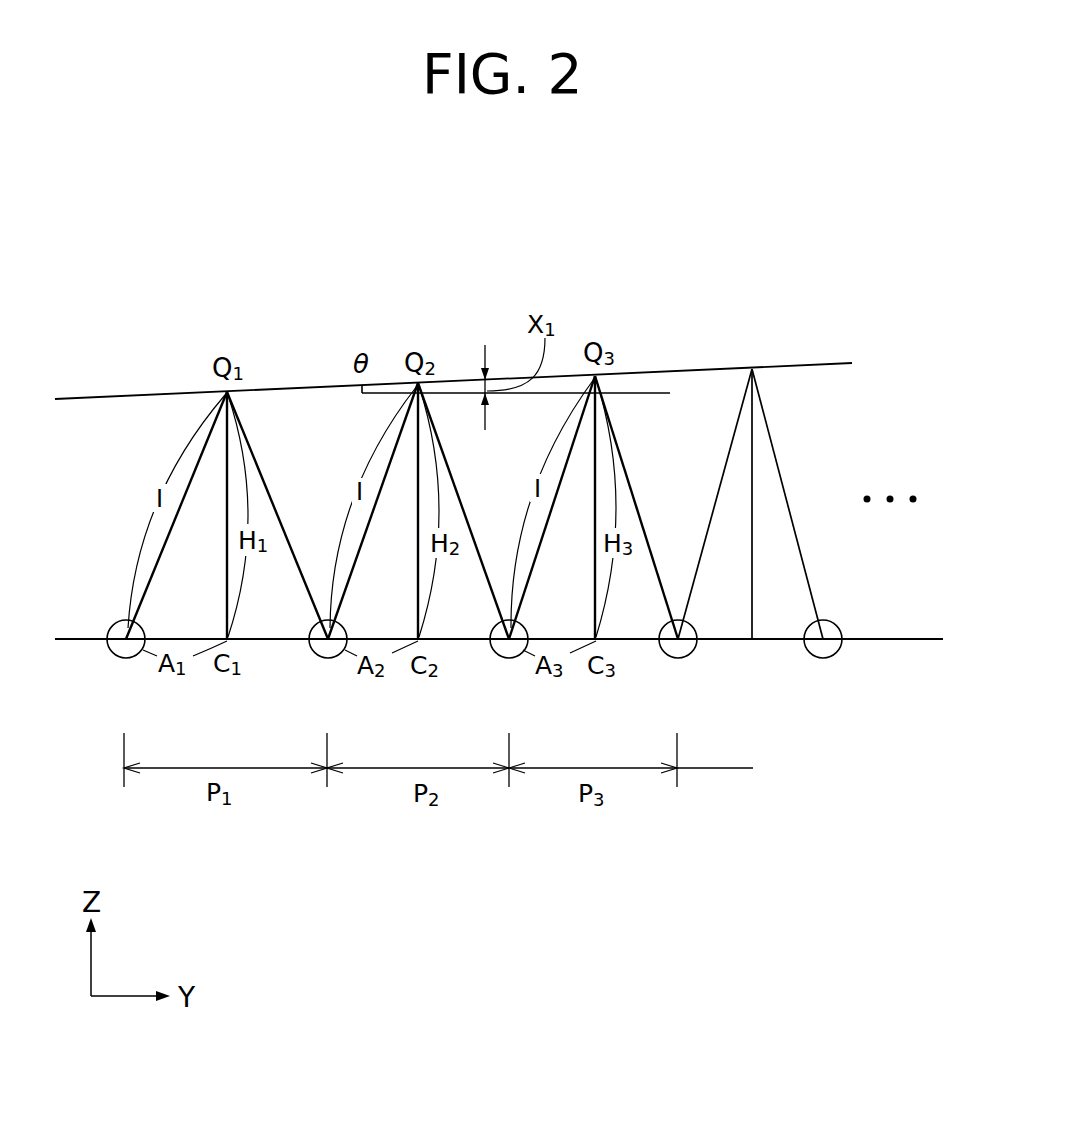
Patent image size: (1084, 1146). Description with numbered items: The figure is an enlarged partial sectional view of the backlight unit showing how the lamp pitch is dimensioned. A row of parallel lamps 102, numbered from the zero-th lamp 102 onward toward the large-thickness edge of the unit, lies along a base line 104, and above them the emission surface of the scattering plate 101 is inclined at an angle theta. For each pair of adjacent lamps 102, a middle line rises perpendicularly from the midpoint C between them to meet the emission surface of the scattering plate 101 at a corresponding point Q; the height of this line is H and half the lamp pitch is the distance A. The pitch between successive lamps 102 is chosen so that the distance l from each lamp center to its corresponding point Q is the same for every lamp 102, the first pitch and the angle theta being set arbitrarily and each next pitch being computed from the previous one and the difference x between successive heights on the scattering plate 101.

The scattering plate 101 is at (804, 356).
The lamp 102 is at (126, 658).
The light emitting element array line 104 is at (872, 652).